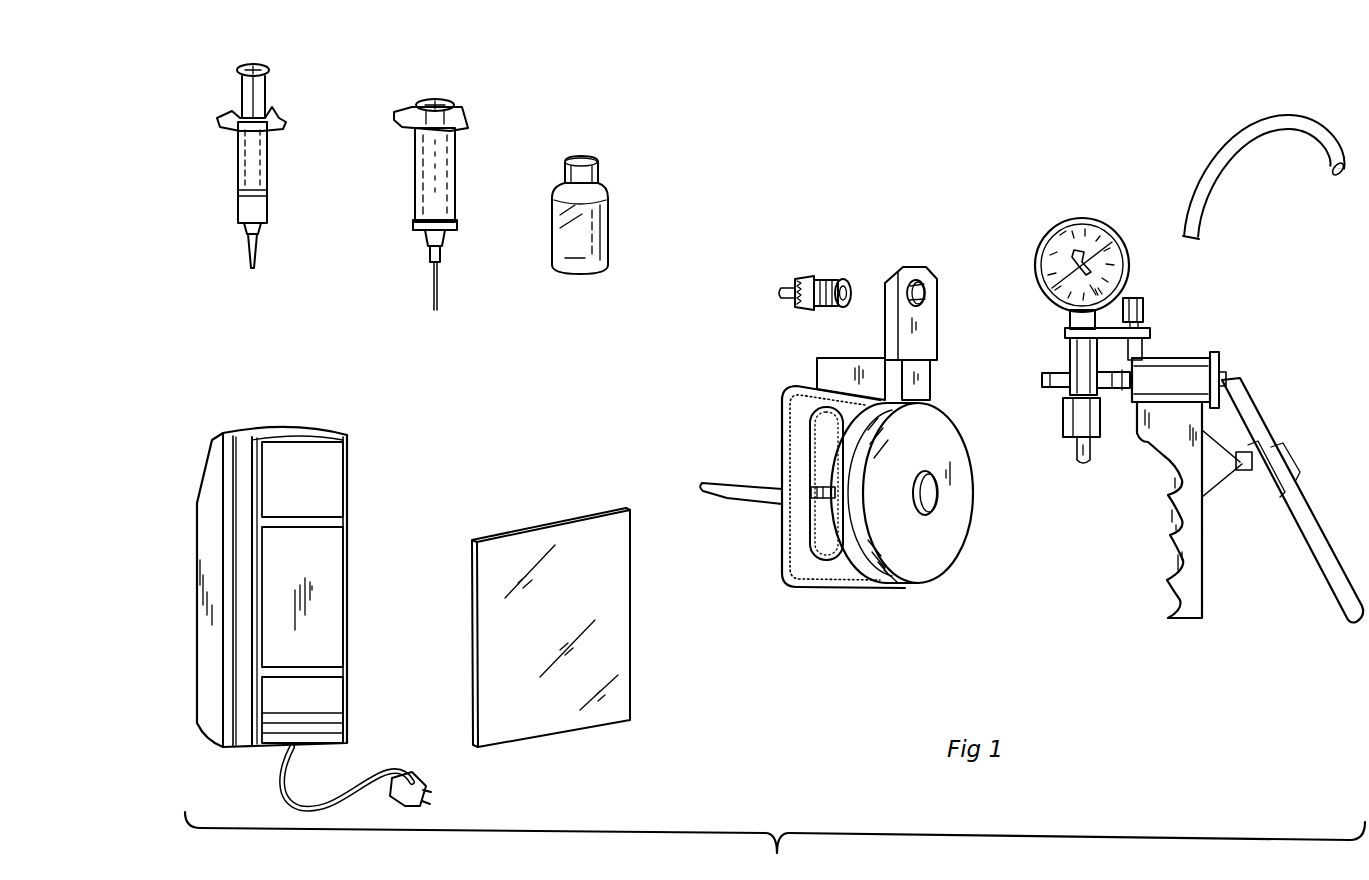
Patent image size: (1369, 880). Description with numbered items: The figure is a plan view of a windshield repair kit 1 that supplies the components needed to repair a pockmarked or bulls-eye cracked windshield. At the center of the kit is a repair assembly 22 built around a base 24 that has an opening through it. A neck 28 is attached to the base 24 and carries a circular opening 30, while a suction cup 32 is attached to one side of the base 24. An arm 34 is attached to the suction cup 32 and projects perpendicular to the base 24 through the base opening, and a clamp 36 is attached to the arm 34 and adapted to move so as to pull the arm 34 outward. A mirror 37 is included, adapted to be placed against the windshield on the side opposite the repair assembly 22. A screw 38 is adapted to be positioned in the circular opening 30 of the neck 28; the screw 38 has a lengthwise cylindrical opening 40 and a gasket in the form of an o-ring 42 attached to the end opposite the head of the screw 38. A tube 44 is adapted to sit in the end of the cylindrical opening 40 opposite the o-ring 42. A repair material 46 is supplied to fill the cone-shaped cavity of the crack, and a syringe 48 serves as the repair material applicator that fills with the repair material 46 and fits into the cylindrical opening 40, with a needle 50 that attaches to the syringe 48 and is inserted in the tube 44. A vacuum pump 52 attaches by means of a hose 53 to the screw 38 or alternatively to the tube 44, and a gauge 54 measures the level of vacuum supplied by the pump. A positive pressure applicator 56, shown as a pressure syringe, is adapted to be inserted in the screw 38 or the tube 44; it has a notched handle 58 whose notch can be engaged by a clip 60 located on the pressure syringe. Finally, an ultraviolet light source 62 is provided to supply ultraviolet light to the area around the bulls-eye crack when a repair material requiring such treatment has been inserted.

The windshield repair kit 1 is at (882, 122).
The repair assembly 22 is at (859, 451).
The base 24 is at (852, 445).
The neck 28 is at (942, 330).
The circular opening 30 is at (922, 292).
The suction cup 32 is at (955, 516).
The arm 34 is at (812, 500).
The clamp 36 is at (752, 497).
The mirror 37 is at (617, 641).
The screw 38 is at (819, 281).
The cylindrical opening 40 is at (850, 287).
The o-ring 42 is at (846, 302).
The tube 44 is at (787, 287).
The repair material 46 is at (590, 222).
The syringe 48 is at (454, 204).
The needle 50 is at (440, 291).
The vacuum pump 52 is at (1236, 400).
The hose 53 is at (1280, 145).
The gauge 54 is at (1090, 228).
The positive pressure applicator 56 is at (256, 160).
The notched handle 58 is at (248, 117).
The clip 60 is at (256, 135).
The ultraviolet light source 62 is at (352, 489).